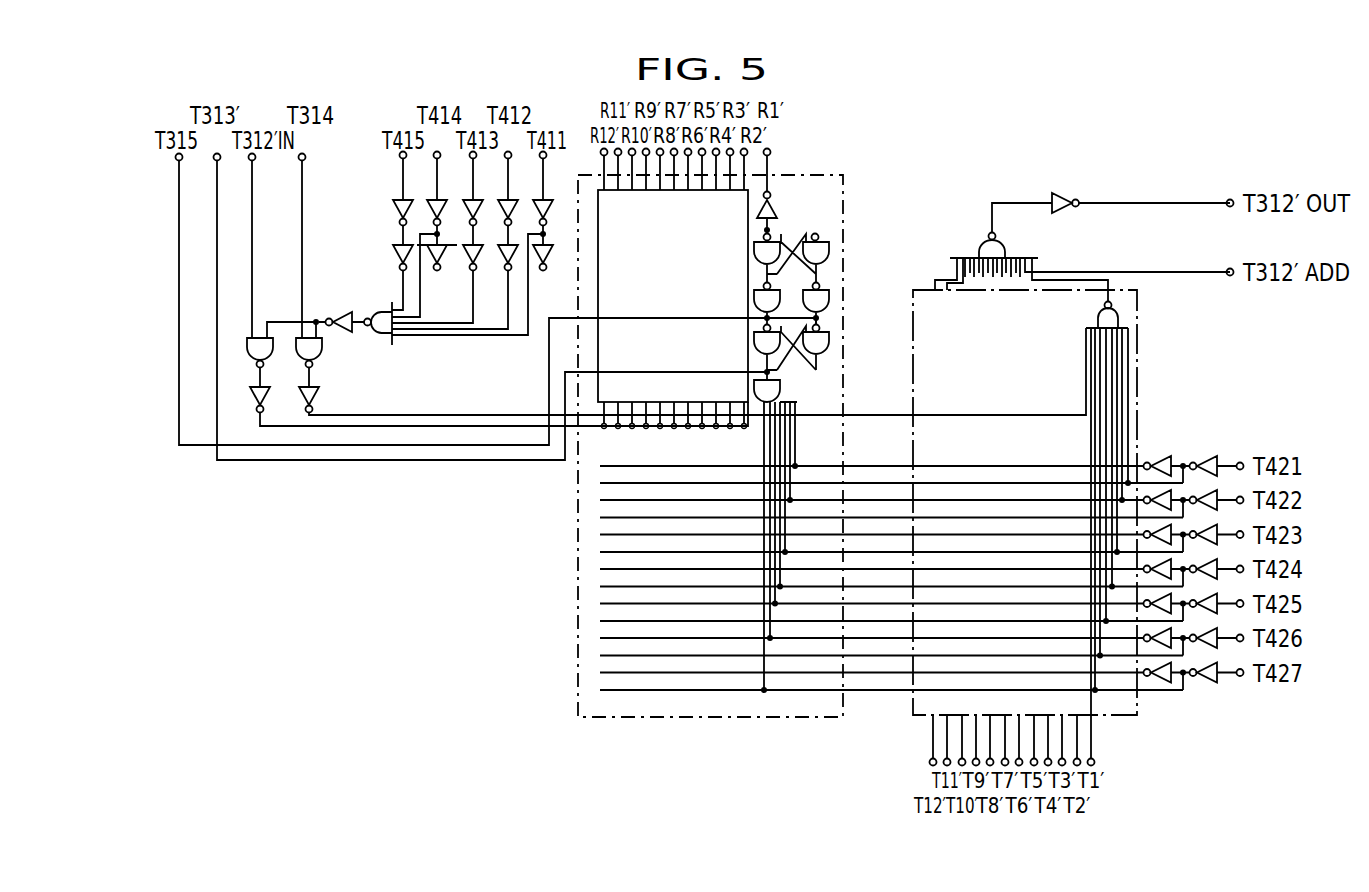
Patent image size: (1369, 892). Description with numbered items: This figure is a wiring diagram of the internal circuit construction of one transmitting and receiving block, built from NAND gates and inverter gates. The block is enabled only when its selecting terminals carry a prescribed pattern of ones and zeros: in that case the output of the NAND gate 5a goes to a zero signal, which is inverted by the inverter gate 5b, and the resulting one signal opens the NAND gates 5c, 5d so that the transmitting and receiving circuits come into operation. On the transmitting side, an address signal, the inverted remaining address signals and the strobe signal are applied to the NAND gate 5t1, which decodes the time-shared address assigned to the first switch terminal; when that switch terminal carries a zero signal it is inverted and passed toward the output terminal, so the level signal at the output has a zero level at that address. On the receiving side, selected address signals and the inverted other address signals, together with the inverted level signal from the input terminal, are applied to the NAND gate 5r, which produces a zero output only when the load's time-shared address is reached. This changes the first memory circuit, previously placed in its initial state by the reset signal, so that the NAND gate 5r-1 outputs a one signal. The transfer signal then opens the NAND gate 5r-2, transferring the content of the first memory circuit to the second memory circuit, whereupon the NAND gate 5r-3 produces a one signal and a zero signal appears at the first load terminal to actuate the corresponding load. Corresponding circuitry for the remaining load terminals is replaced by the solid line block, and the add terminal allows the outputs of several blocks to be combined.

The NAND gate 5a is at (386, 346).
The inverter gate 5b is at (350, 310).
The NAND gate 5c is at (250, 351).
The NAND gate 5d is at (320, 351).
The NAND gate 5r is at (781, 391).
The NAND gate 5r-1 is at (754, 344).
The NAND gate 5r-2 is at (754, 300).
The NAND gate 5r-3 is at (754, 254).
The NAND gate 5t1 is at (1120, 316).